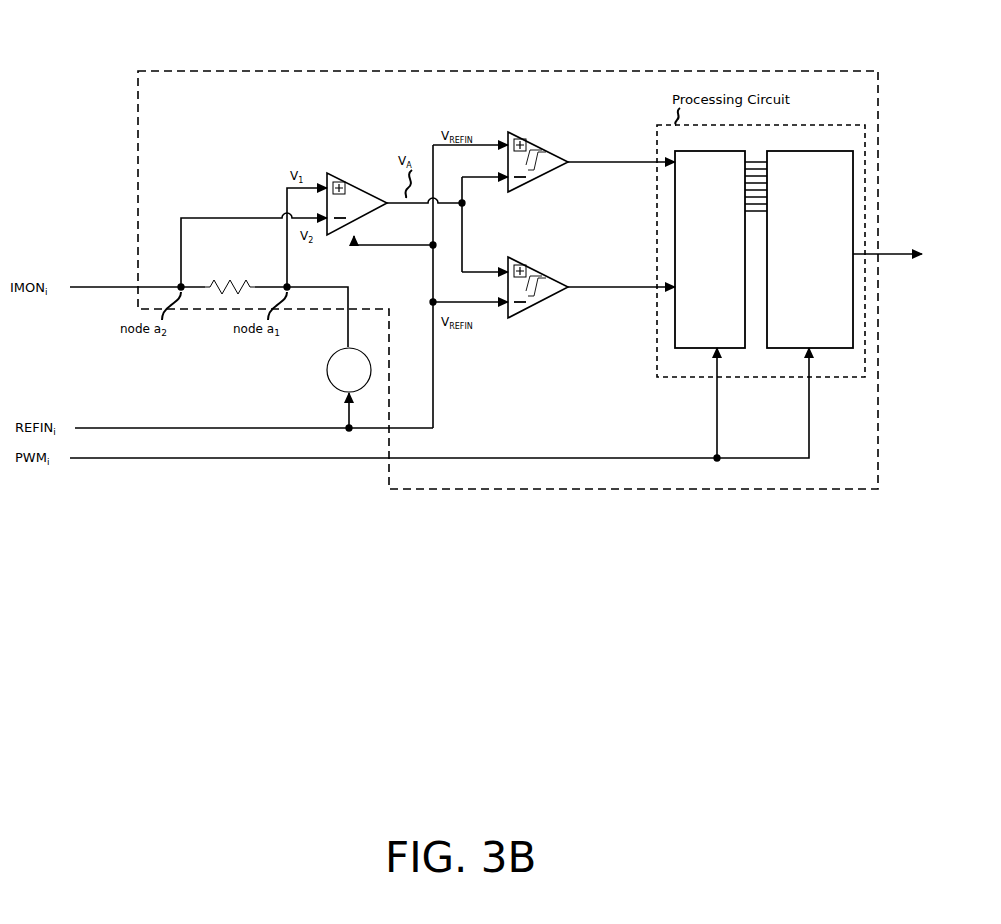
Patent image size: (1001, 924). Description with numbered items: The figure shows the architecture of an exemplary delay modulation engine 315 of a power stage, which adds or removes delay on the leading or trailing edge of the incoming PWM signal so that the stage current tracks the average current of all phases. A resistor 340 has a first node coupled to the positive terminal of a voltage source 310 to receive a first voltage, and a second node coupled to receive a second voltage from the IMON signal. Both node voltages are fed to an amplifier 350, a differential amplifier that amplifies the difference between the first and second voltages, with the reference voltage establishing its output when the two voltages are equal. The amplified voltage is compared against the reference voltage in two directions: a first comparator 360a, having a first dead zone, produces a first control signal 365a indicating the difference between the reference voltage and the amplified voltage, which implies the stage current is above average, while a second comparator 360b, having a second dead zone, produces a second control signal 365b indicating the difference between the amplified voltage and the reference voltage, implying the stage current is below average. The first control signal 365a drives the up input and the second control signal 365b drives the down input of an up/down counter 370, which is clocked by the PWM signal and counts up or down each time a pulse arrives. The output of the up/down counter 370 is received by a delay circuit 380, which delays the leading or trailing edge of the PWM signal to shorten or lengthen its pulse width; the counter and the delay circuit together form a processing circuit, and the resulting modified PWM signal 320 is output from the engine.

The delay modulation engine 315 is at (408, 71).
The resistor 340 is at (245, 287).
The voltage source 310 is at (327, 375).
The amplifier 350 is at (355, 182).
The first comparator 360a is at (550, 152).
The second comparator 360b is at (528, 272).
The first control signal 365a is at (588, 162).
The second control signal 365b is at (587, 287).
The up/down counter 370 is at (710, 249).
The delay circuit 380 is at (810, 249).
The modified PWM output signal 320 is at (900, 253).